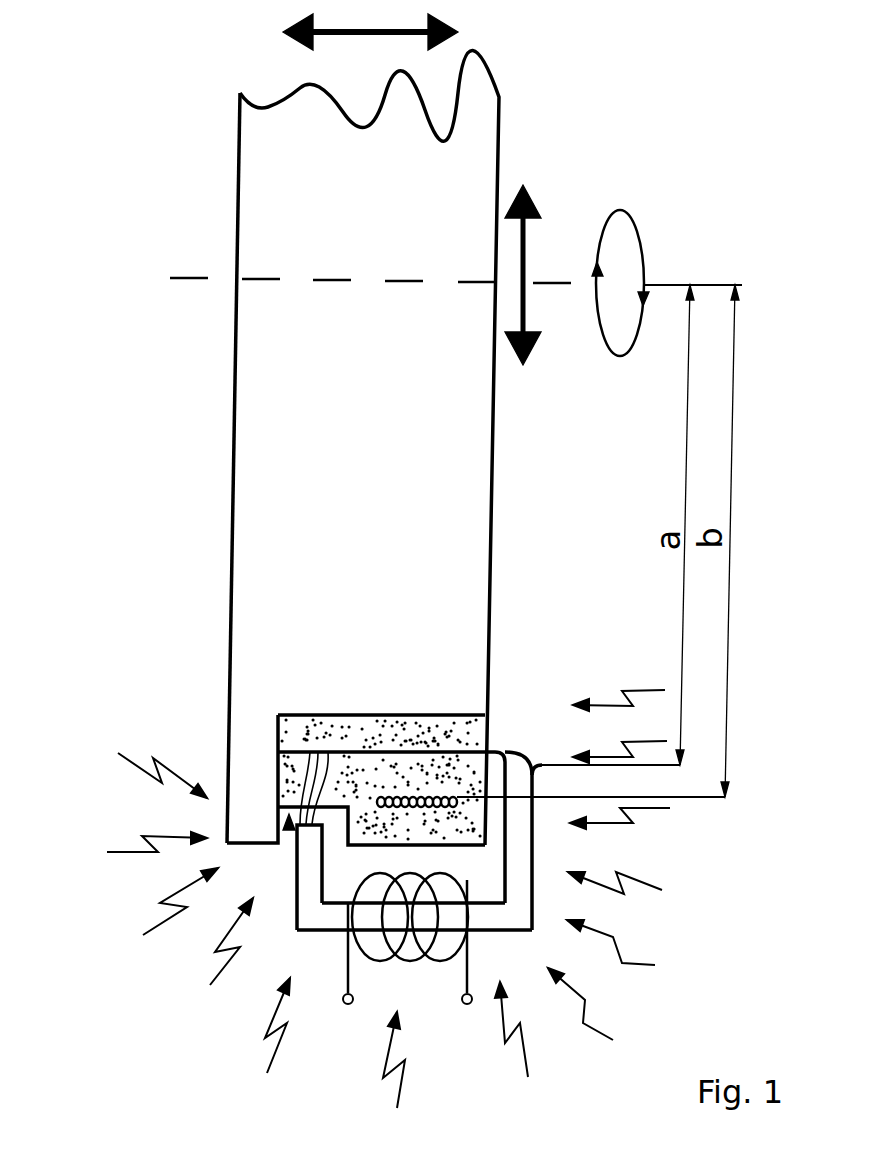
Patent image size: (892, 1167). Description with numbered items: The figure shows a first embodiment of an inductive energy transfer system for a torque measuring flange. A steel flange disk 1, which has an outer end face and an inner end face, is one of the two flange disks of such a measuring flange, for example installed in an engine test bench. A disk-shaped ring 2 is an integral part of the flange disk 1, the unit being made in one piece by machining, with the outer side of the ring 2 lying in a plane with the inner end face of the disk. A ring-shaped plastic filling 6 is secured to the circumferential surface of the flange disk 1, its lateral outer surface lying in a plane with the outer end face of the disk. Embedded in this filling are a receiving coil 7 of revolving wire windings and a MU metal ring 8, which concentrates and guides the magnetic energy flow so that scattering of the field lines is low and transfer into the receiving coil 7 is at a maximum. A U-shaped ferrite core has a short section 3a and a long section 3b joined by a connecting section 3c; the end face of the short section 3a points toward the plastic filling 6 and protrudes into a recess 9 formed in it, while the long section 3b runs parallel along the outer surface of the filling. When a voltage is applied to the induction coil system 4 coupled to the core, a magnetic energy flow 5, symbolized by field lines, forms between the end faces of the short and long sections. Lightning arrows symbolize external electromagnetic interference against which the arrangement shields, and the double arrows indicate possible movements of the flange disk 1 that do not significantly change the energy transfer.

The flange disk 1 is at (470, 552).
The disk-shaped ring 2 is at (253, 783).
The short section 3a is at (298, 885).
The long section 3b is at (517, 843).
The connecting section 3c is at (332, 918).
The induction coil system 4 is at (466, 965).
The magnetic energy flow 5 is at (510, 753).
The ring-shaped plastic filling 6 is at (307, 730).
The receiving coil 7 is at (425, 795).
The MU metal ring 8 is at (300, 768).
The recess 9 is at (289, 830).